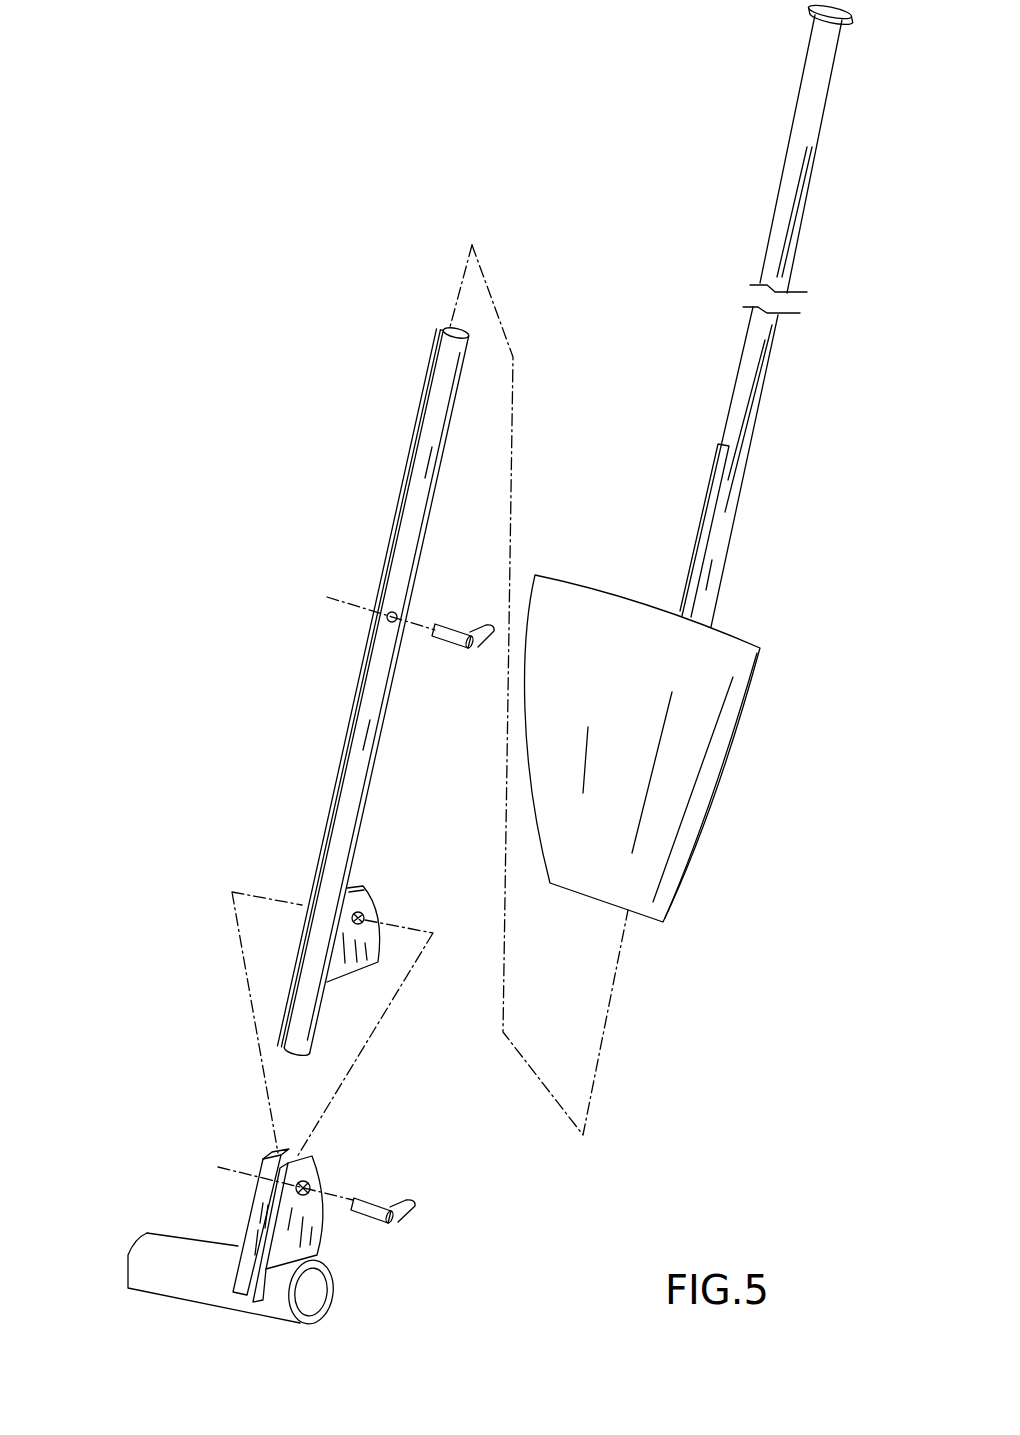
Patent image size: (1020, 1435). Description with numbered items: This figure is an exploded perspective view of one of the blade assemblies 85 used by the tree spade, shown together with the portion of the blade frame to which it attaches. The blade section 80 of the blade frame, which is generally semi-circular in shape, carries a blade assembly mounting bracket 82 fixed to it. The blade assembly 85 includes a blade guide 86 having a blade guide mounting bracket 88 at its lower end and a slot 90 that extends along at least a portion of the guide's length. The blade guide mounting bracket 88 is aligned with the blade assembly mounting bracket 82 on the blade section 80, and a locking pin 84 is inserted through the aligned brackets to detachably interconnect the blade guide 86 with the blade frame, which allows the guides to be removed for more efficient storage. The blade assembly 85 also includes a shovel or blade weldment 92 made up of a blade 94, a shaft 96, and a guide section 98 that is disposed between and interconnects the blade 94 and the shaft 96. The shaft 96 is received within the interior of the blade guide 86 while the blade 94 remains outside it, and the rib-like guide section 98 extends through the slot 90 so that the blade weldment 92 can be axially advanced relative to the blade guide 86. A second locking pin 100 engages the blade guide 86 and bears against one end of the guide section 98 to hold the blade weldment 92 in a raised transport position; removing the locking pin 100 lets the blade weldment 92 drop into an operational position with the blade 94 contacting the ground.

The blade section 80 is at (162, 1237).
The blade assembly mounting bracket 82 is at (320, 1243).
The locking pin 84 is at (417, 1205).
The blade assembly 85 is at (223, 243).
The blade guide 86 is at (413, 508).
The blade guide mounting bracket 88 is at (362, 907).
The slot 90 is at (460, 352).
The blade weldment 92 is at (657, 206).
The blade 94 is at (637, 690).
The shaft 96 is at (805, 62).
The guide section 98 is at (700, 519).
The locking pin 100 is at (487, 645).